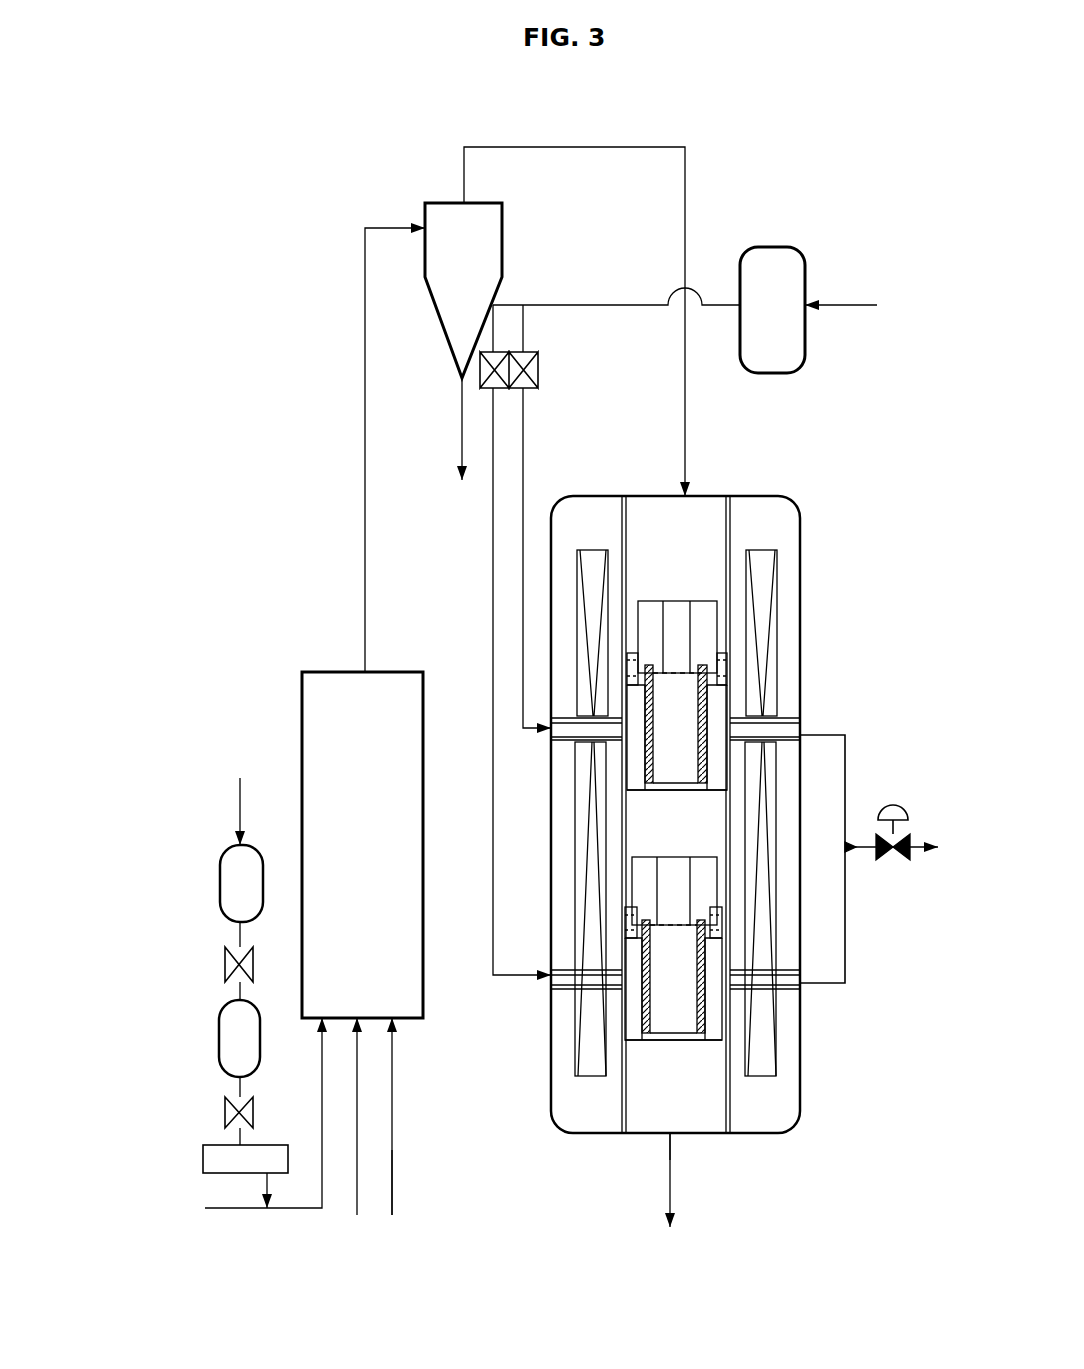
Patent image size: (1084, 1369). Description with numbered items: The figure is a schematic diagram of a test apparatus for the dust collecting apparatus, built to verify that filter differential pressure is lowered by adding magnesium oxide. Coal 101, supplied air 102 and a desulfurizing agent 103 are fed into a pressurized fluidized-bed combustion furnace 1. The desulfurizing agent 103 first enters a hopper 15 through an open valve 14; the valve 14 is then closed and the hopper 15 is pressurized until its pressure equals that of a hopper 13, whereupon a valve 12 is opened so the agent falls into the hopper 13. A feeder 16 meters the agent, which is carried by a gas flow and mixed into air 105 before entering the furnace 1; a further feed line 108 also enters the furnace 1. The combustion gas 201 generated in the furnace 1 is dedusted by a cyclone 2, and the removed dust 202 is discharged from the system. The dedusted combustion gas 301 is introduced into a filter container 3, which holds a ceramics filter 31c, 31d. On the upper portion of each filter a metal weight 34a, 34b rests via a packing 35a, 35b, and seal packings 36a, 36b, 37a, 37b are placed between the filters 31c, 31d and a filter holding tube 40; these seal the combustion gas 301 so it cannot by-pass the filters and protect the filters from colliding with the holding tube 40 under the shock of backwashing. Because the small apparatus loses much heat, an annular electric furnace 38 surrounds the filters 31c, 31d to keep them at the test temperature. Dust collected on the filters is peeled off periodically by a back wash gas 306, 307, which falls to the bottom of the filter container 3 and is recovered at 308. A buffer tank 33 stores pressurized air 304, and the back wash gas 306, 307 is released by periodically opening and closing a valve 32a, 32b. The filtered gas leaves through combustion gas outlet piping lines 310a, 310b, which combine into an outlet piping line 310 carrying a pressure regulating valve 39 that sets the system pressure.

The pressurized fluidized-bed combustion furnace 1 is at (302, 673).
The cyclone 2 is at (428, 207).
The filter container 3 is at (672, 1135).
The valve 12 is at (228, 1112).
The hopper 13 is at (220, 1040).
The valve 14 is at (228, 965).
The hopper 15 is at (220, 884).
The feeder 16 is at (203, 1160).
The ceramics filter 31c is at (710, 735).
The ceramics filter 31d is at (708, 995).
The valve 32a is at (494, 304).
The valve 32b is at (540, 366).
The buffer tank 33 is at (753, 247).
The weight 34a is at (705, 612).
The weight 34b is at (702, 880).
The packing 35a is at (729, 650).
The packing 35b is at (628, 918).
The seal packing 36a is at (728, 670).
The seal packing 36b is at (725, 925).
The seal packing 37a is at (650, 790).
The seal packing 37b is at (722, 1015).
The annular electric furnace 38 is at (583, 548).
The pressure regulating valve 39 is at (904, 812).
The filter holding tube 40 is at (613, 1116).
The coal 101 is at (392, 1195).
The supplied air 102 is at (357, 1212).
The desulfurizing agent 103 is at (252, 1204).
The air 105 is at (225, 1212).
The feed line 108 is at (305, 1212).
The combustion gas 201 is at (363, 470).
The dust 202 is at (461, 447).
The combustion gas 301 is at (528, 147).
The pressurized air 304 is at (848, 306).
The back wash gas 306 is at (521, 730).
The back wash gas 307 is at (494, 718).
The recovered dust 308 is at (663, 1190).
The combustion gas outlet piping line 310 is at (858, 850).
The combustion gas outlet piping line 310a is at (821, 735).
The combustion gas outlet piping line 310b is at (826, 985).